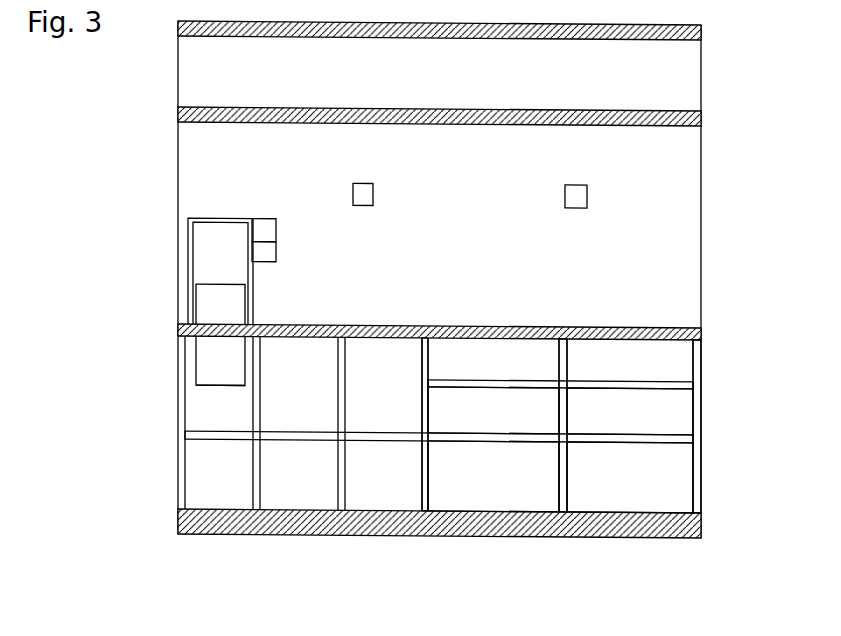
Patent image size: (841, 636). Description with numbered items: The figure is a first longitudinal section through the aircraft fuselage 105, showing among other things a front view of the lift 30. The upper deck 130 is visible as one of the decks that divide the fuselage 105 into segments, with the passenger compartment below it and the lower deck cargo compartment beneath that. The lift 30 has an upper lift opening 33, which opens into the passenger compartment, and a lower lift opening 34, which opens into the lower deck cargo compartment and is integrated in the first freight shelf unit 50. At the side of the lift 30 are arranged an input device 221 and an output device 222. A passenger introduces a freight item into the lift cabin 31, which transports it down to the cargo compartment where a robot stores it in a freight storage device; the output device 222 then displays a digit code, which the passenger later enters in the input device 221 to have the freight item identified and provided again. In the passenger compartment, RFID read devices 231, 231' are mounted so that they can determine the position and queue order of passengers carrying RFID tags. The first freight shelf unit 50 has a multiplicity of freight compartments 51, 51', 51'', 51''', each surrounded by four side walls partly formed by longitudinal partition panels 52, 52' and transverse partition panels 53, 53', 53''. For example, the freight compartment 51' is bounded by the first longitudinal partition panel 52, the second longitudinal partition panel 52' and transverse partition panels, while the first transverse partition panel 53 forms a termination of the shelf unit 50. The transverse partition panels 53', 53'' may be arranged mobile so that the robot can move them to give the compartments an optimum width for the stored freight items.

The aircraft fuselage 105 is at (195, 32).
The upper deck 130 is at (252, 114).
The RFID read device 231 is at (214, 172).
The RFID read device 231' is at (691, 177).
The output device 222 is at (266, 229).
The input device 221 is at (266, 249).
The lift 30 is at (184, 274).
The upper lift opening 33 is at (205, 263).
The lower lift opening 34 is at (197, 390).
The lift cabin 31 is at (220, 392).
The freight shelf unit 50 is at (706, 389).
The freight compartment 51 is at (671, 411).
The freight compartment 51' is at (601, 346).
The freight compartment 51'' is at (493, 536).
The freight compartment 51''' is at (690, 477).
The longitudinal partition panel 52 is at (485, 447).
The longitudinal partition panel 52' is at (606, 362).
The transverse partition panel 53 is at (751, 432).
The transverse partition panel 53' is at (548, 479).
The transverse partition panel 53'' is at (409, 472).